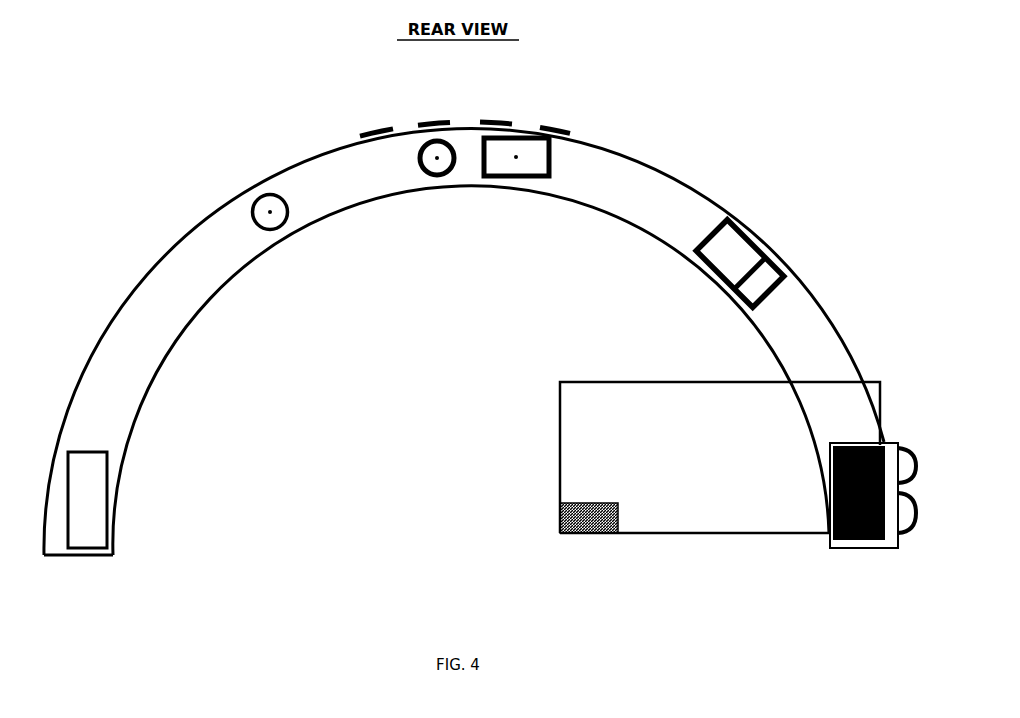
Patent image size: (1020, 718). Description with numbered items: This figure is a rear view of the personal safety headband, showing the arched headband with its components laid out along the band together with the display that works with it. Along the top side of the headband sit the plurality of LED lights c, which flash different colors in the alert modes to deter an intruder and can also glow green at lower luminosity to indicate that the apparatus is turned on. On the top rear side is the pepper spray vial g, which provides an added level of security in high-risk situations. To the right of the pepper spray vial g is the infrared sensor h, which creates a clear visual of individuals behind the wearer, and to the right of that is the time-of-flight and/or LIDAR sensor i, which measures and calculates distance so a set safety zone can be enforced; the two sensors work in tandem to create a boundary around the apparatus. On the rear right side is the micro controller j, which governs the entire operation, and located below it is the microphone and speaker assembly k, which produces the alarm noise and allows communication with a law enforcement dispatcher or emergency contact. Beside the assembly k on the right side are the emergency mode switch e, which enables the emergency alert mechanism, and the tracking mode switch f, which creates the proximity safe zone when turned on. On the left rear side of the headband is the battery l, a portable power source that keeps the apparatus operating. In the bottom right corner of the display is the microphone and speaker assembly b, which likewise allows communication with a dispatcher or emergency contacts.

The microphone and speaker assembly b is at (580, 535).
The plurality of LED lights c is at (378, 127).
The emergency mode switch e is at (914, 518).
The tracking mode switch f is at (900, 456).
The pepper spray vial g is at (270, 212).
The infrared sensor h is at (437, 178).
The time-of-flight and/or LIDAR sensor i is at (512, 178).
The micro controller j is at (712, 282).
The microphone and speaker assembly k is at (870, 548).
The battery l is at (100, 510).